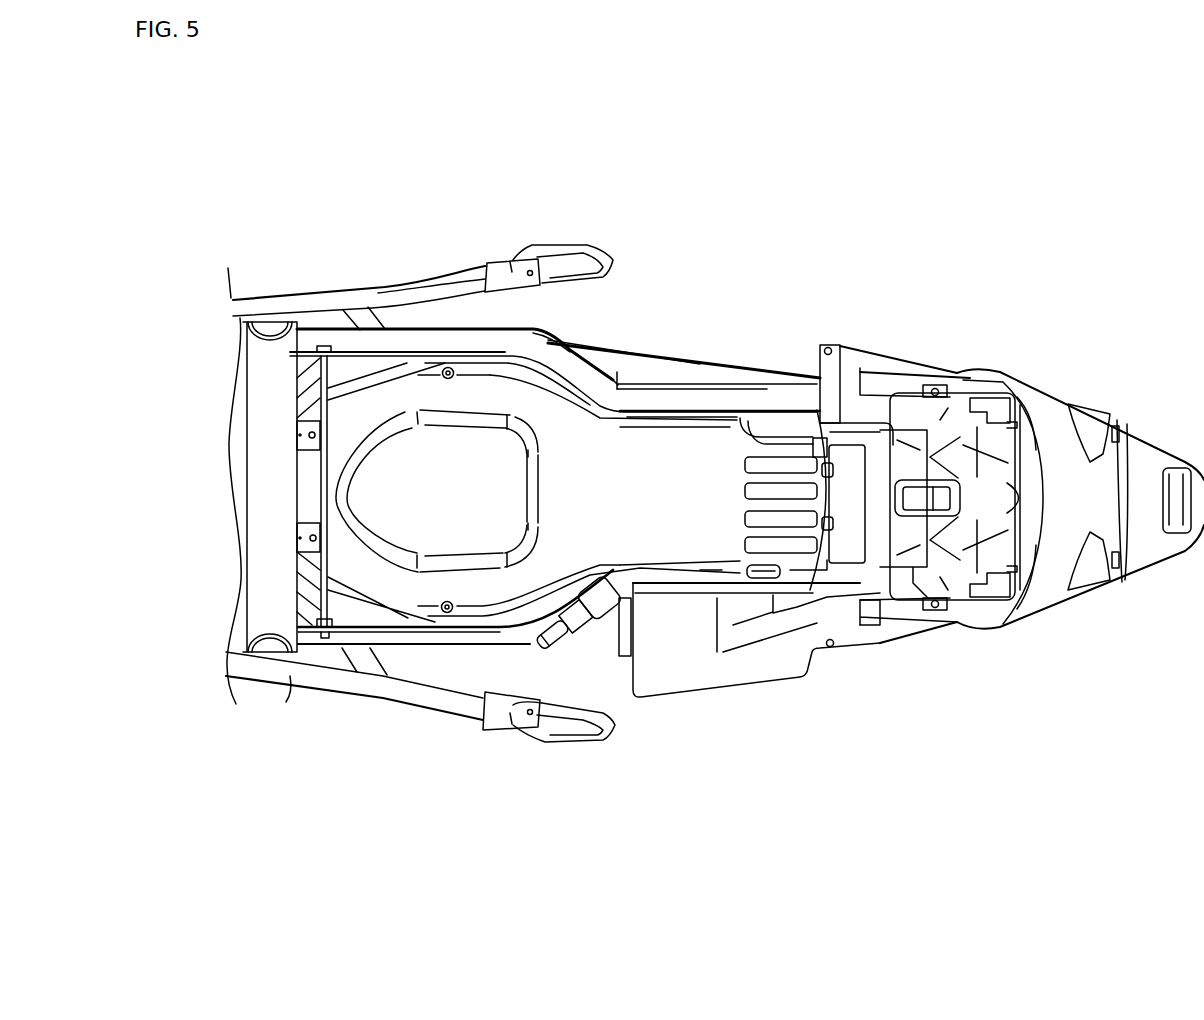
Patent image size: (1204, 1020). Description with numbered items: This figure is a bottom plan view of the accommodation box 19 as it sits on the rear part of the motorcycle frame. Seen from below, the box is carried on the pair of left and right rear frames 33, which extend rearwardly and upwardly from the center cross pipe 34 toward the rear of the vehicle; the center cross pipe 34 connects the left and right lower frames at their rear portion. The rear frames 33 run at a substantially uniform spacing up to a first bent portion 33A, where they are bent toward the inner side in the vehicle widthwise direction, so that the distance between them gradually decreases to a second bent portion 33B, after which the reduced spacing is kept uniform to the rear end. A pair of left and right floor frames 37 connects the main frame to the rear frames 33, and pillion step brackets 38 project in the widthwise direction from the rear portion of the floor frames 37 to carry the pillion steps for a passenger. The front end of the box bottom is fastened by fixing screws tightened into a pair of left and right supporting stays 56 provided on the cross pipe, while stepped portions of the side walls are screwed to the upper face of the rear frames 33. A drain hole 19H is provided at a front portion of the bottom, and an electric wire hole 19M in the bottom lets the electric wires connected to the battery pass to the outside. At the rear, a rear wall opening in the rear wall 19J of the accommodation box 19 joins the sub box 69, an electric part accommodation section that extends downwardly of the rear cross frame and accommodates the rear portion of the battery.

The accommodation box 19 is at (658, 354).
The drain hole 19H is at (453, 368).
The rear wall 19J is at (835, 593).
The electric wire hole 19M is at (755, 580).
The rear frames 33 is at (405, 677).
The first bent portion 33A is at (538, 335).
The second bent portion 33B is at (619, 382).
The center cross pipe 34 is at (243, 612).
The floor frames 37 is at (307, 298).
The pillion step brackets 38 is at (345, 316).
The supporting stays 56 is at (300, 523).
The sub box 69 is at (845, 444).